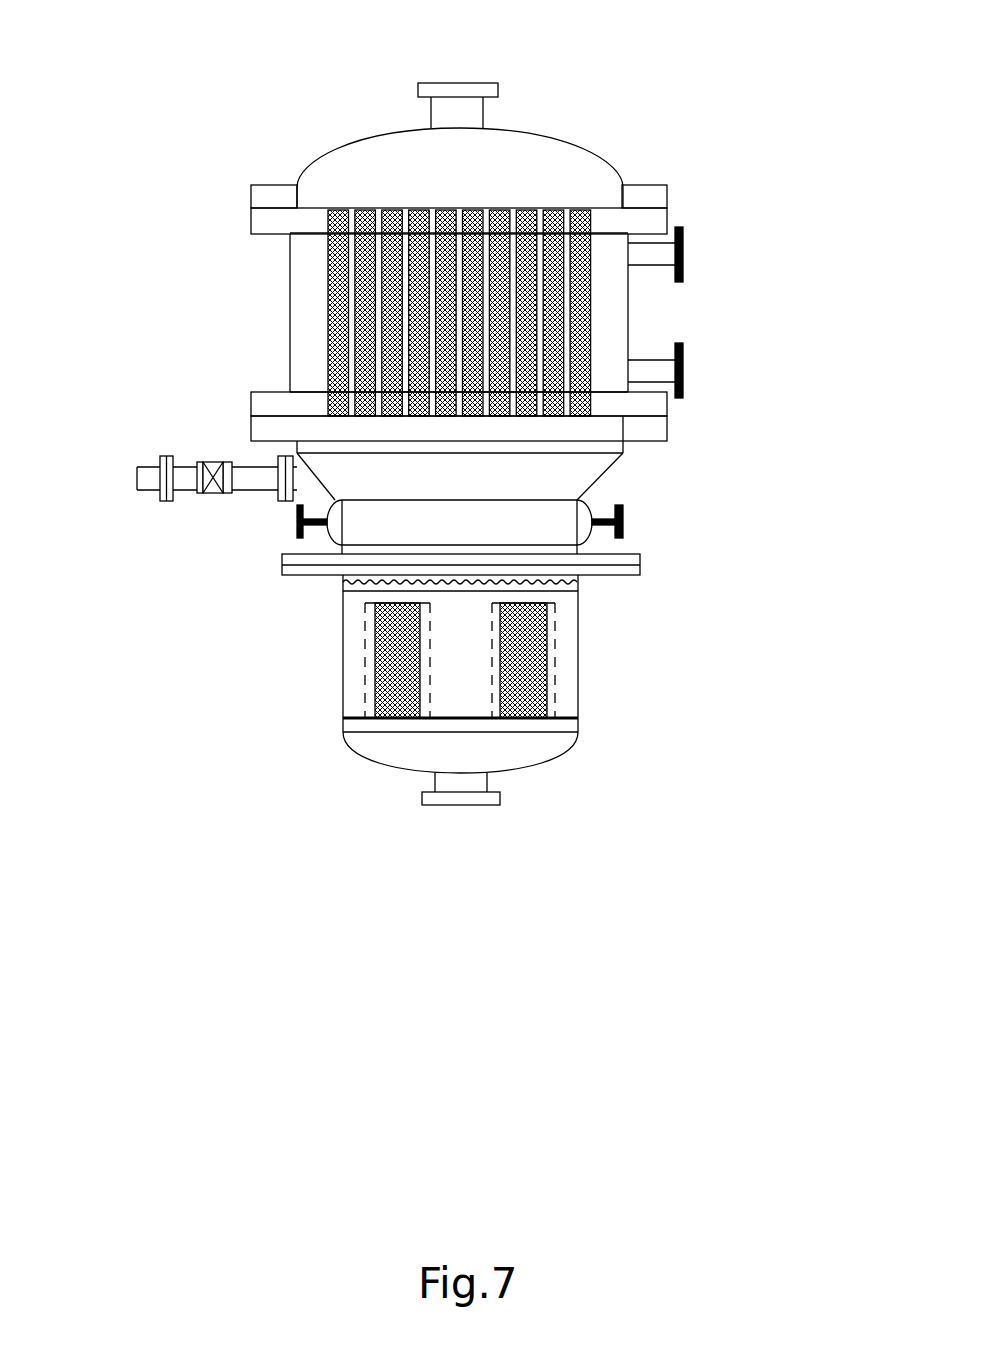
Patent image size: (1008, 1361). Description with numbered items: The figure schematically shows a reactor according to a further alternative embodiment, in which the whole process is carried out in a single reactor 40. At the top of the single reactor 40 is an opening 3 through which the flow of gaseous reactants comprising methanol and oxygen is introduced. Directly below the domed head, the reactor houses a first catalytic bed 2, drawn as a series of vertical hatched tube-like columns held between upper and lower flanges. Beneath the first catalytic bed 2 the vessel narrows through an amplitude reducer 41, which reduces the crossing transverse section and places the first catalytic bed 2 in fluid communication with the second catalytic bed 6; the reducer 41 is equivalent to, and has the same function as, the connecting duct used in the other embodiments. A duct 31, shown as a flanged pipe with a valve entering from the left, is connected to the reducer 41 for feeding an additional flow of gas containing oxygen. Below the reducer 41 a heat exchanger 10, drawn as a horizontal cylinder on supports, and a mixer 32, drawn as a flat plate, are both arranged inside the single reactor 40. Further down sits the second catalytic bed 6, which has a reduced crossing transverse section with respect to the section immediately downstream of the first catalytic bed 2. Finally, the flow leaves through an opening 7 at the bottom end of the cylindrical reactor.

The first catalytic bed 2 is at (327, 318).
The opening 3 is at (462, 83).
The second catalytic bed 6 is at (375, 667).
The opening 7 is at (465, 805).
The heat exchanger 10 is at (327, 538).
The duct 31 is at (148, 465).
The mixer 32 is at (580, 579).
The single reactor 40 is at (706, 170).
The amplitude reducer 41 is at (603, 473).